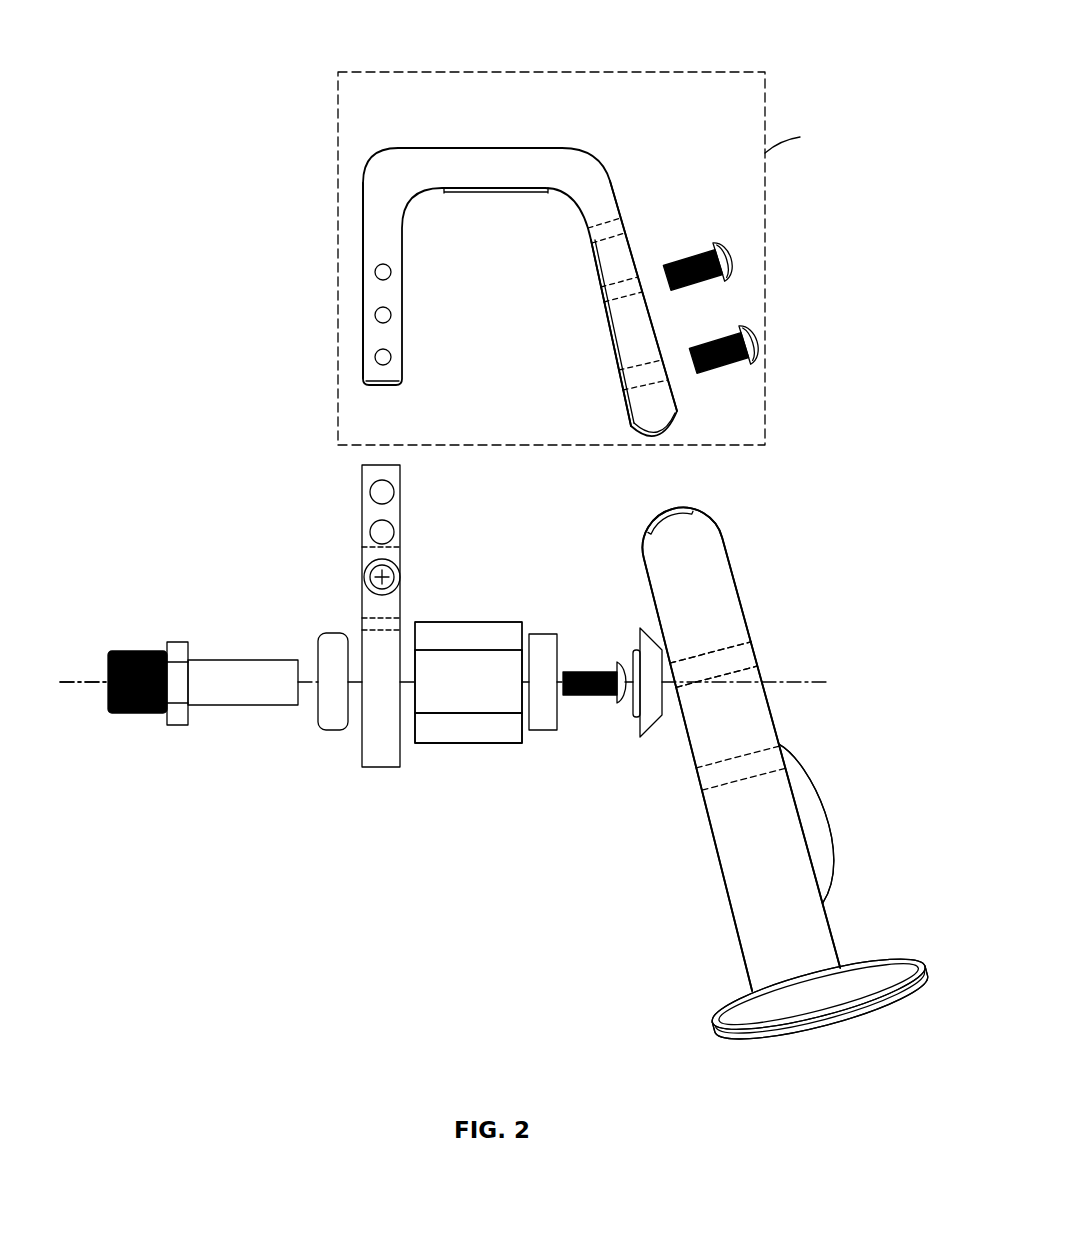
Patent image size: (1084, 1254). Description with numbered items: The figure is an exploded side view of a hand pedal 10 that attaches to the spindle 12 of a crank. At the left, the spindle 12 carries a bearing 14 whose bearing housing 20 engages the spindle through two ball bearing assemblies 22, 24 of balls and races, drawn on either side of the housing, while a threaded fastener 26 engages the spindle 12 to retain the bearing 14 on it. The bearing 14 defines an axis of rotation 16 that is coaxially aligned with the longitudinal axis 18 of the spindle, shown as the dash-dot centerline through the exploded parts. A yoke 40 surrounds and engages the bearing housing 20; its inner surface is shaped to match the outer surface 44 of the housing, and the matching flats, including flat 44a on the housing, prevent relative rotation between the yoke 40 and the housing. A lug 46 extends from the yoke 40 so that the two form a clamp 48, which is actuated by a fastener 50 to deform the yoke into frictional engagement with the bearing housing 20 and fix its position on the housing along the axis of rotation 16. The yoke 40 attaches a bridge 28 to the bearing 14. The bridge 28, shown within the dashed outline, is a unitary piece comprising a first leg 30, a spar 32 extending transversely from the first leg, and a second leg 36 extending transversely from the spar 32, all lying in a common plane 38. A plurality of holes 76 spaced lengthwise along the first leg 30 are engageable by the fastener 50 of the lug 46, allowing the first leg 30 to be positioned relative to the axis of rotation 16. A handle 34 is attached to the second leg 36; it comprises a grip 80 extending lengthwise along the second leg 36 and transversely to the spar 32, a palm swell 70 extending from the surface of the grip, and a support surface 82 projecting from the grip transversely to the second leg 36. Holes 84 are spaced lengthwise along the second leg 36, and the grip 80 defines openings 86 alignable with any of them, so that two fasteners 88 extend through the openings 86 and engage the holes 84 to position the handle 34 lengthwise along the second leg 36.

The hand pedal 10 is at (264, 66).
The spindle 12 is at (150, 713).
The bearing 14 is at (460, 743).
The axis of rotation 16 is at (92, 685).
The longitudinal axis 18 is at (92, 685).
The bearing housing 20 is at (447, 622).
The ball bearing assembly 22 is at (333, 733).
The ball bearing assembly 24 is at (543, 733).
The threaded fastener 26 is at (598, 697).
The bridge 28 is at (363, 193).
The first leg 30 is at (363, 228).
The spar 32 is at (485, 148).
The handle 34 is at (803, 832).
The second leg 36 is at (625, 262).
The common plane 38 is at (758, 93).
The yoke 40 is at (380, 768).
The outer surface 44 is at (505, 743).
The flat 44a is at (473, 672).
The lug 46 is at (362, 588).
The clamp 48 is at (324, 614).
The fastener 50 is at (369, 564).
The palm swell 70 is at (820, 773).
The holes 76 is at (374, 313).
The grip 80 is at (803, 832).
The support surface 82 is at (897, 960).
The holes 84 is at (632, 363).
The opening 86 is at (733, 663).
The fastener 88 is at (760, 343).